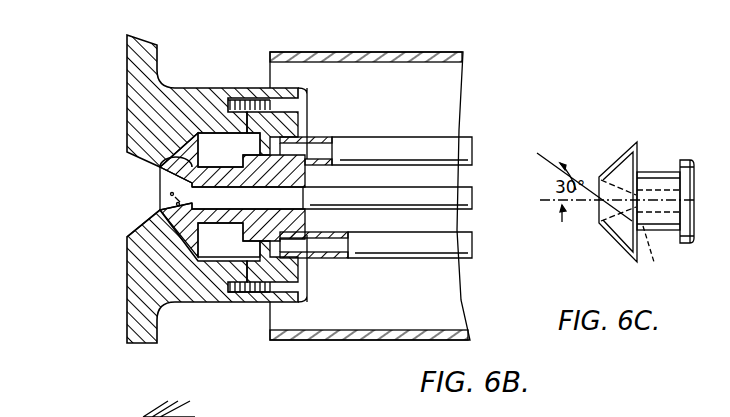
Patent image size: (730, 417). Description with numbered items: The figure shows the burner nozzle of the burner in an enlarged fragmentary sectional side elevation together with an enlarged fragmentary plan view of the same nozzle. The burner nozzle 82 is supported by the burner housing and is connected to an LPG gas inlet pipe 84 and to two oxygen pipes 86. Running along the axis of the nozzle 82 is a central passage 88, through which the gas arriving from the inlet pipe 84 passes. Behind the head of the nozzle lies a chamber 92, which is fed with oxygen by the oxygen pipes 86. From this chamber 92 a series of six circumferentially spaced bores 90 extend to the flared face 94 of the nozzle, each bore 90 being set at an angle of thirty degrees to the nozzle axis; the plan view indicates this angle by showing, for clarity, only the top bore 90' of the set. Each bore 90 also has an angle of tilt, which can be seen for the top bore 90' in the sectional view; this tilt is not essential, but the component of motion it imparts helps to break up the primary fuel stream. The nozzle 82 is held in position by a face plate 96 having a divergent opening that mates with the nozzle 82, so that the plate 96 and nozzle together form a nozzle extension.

In FIG. 6B, the burner nozzle 82 is at (148, 188).
In FIG. 6C, the burner nozzle 82 is at (619, 152).
In FIG. 6B, the LPG gas inlet pipe 84 is at (470, 198).
In FIG. 6B, the oxygen pipes 86 is at (383, 152).
In FIG. 6B, the central passage 88 is at (245, 192).
In FIG. 6C, the central passage 88 is at (663, 200).
In FIG. 6B, the circumferentially spaced bores 90 is at (232, 273).
In FIG. 6B, the top bore 90' is at (131, 164).
In FIG. 6C, the top bore 90' is at (665, 257).
In FIG. 6B, the chamber 92 is at (212, 150).
In FIG. 6B, the flared face 94 is at (162, 208).
In FIG. 6B, the face plate 96 is at (145, 62).